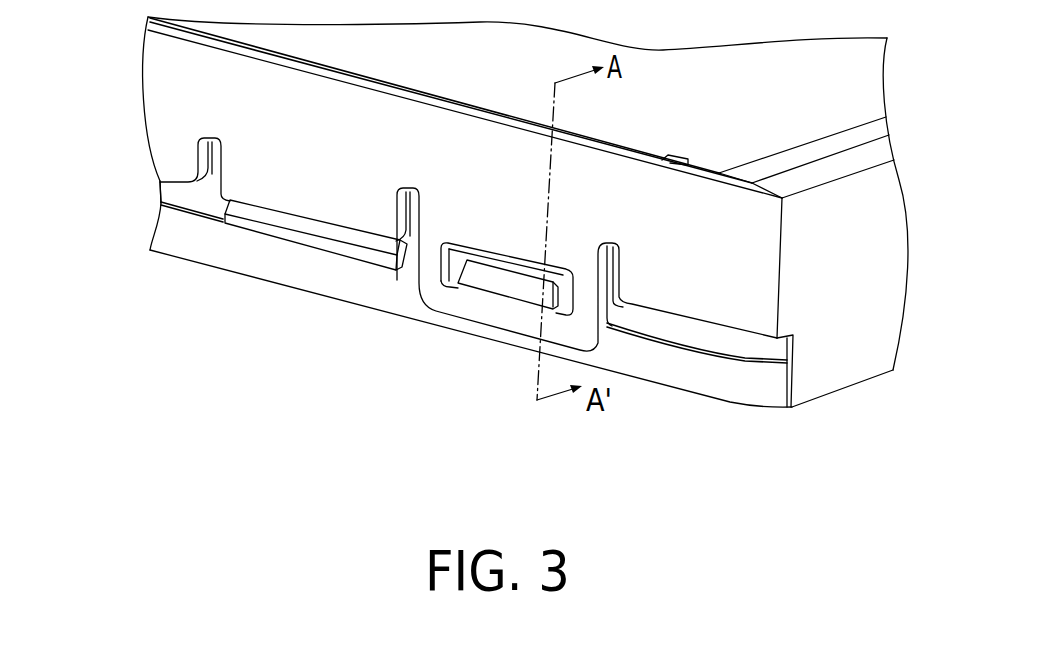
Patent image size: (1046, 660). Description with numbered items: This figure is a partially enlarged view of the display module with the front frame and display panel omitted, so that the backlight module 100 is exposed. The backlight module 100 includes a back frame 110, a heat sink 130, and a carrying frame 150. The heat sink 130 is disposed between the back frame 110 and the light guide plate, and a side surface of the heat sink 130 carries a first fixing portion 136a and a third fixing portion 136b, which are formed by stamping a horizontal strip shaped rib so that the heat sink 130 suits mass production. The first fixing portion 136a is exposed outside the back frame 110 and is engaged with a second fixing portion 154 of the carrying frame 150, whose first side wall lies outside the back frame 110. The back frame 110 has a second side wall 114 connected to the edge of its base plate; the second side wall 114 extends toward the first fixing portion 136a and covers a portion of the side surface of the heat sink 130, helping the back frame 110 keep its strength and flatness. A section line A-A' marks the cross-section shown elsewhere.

The backlight module 100 is at (833, 434).
The back frame 110 is at (713, 383).
The second side wall 114 is at (779, 268).
The heat sink 130 is at (168, 190).
The first fixing portion 136a is at (500, 294).
The third fixing portion 136b is at (316, 232).
The carrying frame 150 is at (163, 120).
The second fixing portion 154 is at (436, 285).